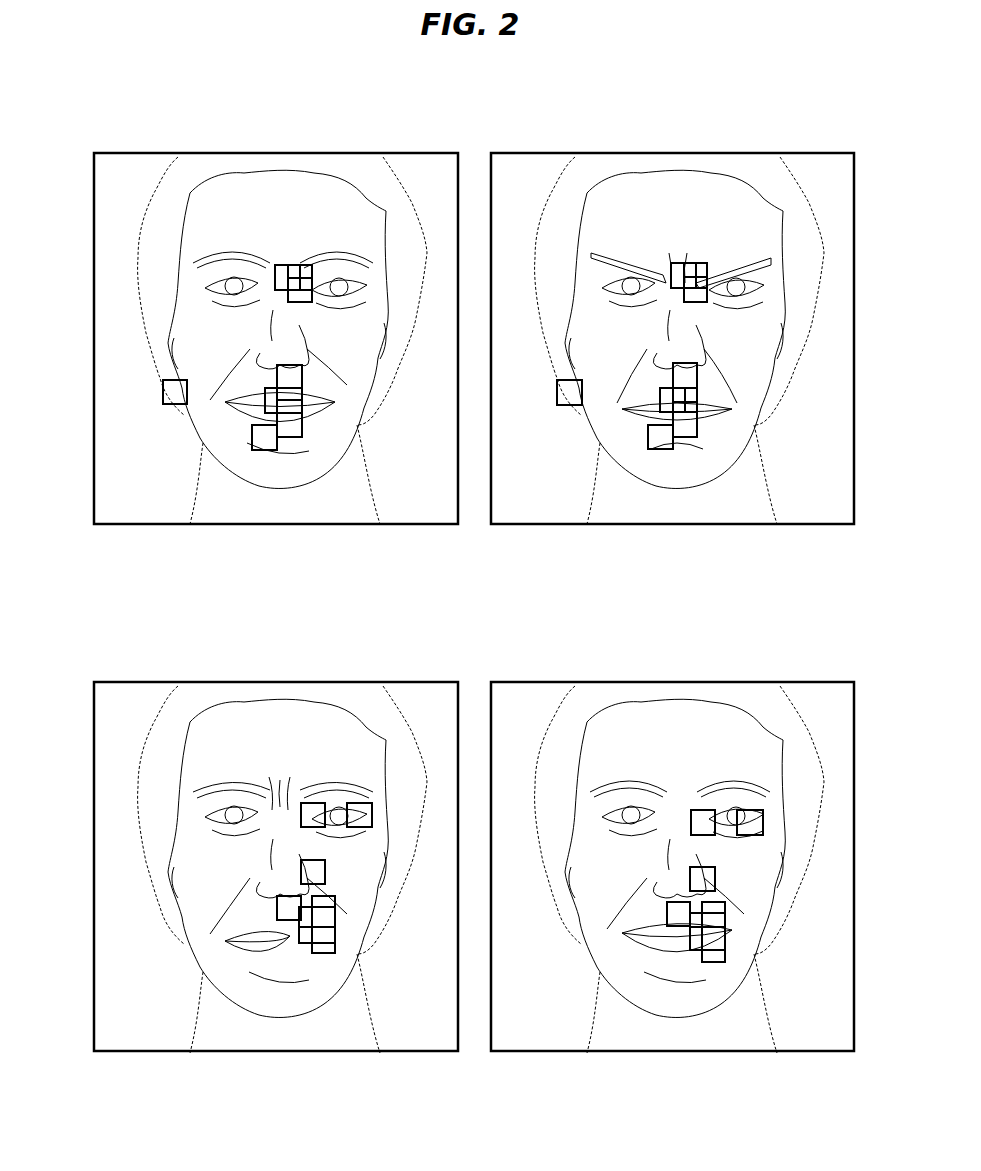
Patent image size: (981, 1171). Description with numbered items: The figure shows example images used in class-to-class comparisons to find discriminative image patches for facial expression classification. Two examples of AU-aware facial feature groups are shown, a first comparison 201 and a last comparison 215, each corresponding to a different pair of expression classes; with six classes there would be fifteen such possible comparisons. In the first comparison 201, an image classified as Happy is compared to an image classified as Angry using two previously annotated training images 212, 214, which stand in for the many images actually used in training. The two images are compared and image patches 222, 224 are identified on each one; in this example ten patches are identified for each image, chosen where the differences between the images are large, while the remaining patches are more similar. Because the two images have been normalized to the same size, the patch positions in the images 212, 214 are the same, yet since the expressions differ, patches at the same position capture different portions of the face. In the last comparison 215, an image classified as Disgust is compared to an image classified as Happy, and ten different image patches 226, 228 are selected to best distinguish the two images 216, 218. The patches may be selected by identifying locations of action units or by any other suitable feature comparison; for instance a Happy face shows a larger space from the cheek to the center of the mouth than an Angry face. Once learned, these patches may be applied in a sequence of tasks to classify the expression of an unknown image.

The first class-to-class comparison 201 is at (474, 348).
The first training image 212 is at (245, 313).
The second training image 214 is at (703, 313).
The last class-to-class comparison 215 is at (472, 875).
The third training image 216 is at (243, 839).
The fourth training image 218 is at (703, 839).
The image patches of the first image 222 is at (205, 425).
The image patches of the second image 224 is at (725, 340).
The image patches of the third image 226 is at (187, 954).
The image patches of the fourth image 228 is at (725, 869).